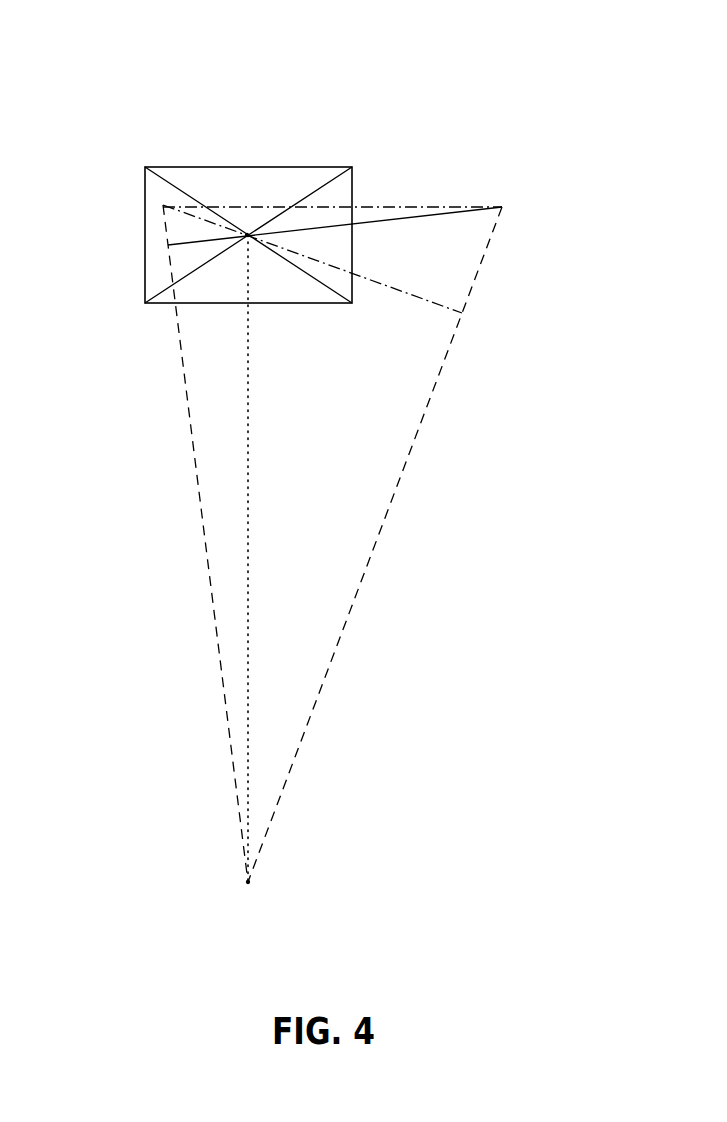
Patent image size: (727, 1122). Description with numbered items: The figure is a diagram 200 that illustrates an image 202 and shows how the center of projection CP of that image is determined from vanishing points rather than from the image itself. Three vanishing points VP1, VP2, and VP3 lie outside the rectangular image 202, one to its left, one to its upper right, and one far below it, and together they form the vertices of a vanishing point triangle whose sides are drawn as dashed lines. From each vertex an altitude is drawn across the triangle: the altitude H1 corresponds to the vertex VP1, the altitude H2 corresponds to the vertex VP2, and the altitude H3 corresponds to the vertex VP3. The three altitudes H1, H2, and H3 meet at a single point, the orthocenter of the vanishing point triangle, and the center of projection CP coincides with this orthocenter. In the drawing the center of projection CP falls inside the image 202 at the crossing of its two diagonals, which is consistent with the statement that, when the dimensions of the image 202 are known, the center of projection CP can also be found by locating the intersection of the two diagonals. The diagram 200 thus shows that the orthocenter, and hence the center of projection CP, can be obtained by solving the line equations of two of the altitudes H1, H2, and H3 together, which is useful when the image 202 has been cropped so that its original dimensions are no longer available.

The diagram 200 is at (385, 76).
The image 202 is at (283, 167).
The center of projection CP is at (247, 233).
The first vanishing point VP1 is at (163, 204).
The second vanishing point VP2 is at (502, 207).
The third vanishing point VP3 is at (248, 882).
The first altitude H1 is at (410, 294).
The second altitude H2 is at (396, 212).
The third altitude H3 is at (249, 499).